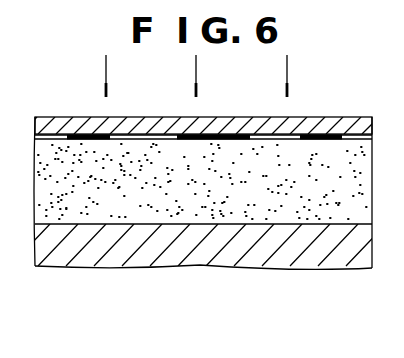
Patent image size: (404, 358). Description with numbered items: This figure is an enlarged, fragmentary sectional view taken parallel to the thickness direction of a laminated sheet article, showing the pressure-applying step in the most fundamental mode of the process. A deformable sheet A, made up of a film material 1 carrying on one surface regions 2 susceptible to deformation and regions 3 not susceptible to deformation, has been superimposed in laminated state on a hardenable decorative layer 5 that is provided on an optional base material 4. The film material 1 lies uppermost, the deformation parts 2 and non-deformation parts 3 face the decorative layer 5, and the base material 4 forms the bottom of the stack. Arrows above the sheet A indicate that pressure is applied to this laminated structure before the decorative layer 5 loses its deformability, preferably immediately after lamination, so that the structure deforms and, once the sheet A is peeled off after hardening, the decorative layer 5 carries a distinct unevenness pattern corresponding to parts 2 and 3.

The film material 1 is at (149, 117).
The deformation parts 2 is at (296, 132).
The non-deformation parts 3 is at (226, 133).
The base material 4 is at (227, 260).
The decorative layer 5 is at (77, 147).
The deformable sheet A is at (390, 147).